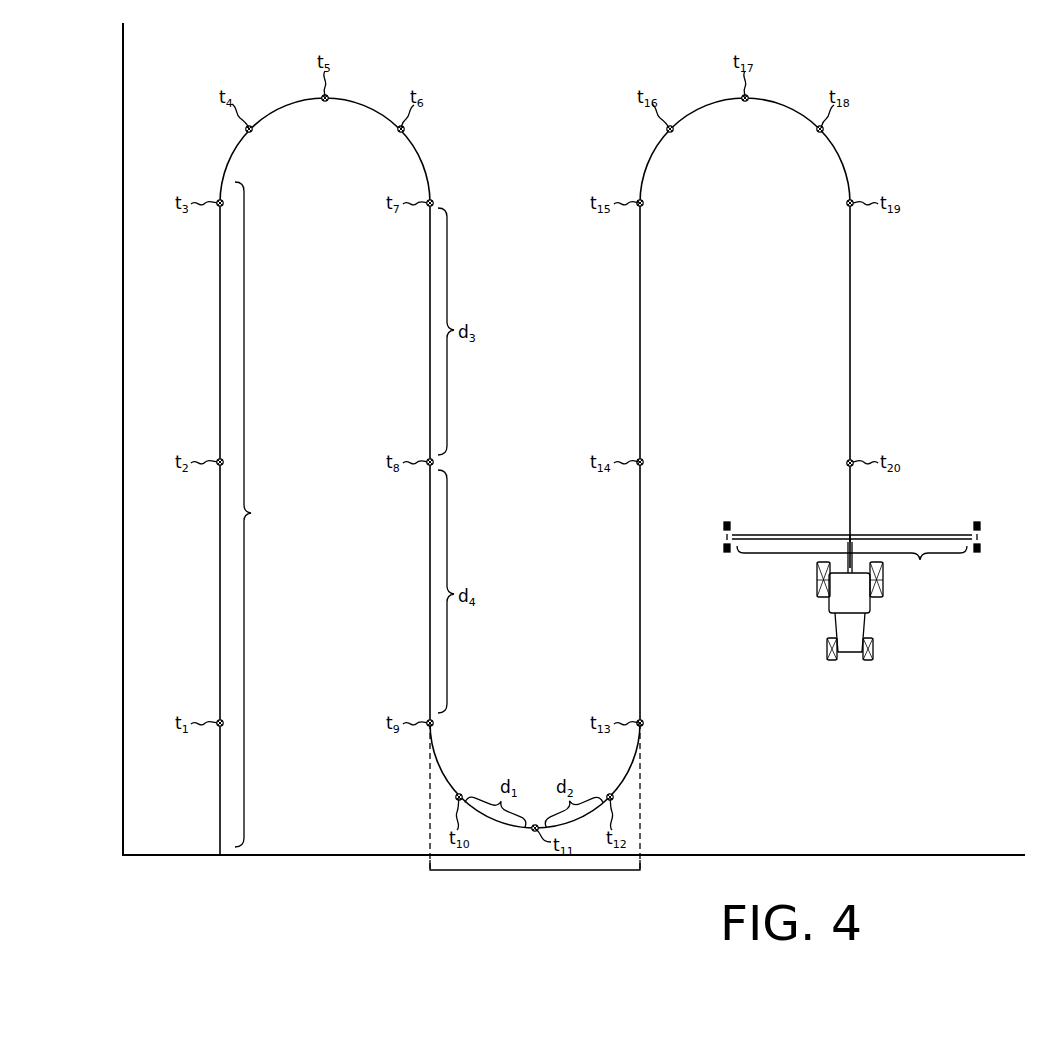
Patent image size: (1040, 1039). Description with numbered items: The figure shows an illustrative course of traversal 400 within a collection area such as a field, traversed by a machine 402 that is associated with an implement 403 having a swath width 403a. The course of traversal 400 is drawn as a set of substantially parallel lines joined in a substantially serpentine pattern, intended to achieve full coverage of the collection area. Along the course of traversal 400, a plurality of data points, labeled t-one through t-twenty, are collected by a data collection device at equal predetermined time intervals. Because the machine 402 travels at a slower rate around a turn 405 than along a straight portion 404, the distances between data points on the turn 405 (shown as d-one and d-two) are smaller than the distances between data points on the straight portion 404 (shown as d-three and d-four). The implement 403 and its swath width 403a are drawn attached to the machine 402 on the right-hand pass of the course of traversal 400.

The course of traversal 400 is at (218, 588).
The machine 402 is at (850, 660).
The implement 403 is at (820, 535).
The swath width 403a is at (852, 566).
The straight portion 404 is at (265, 514).
The turn 405 is at (535, 818).